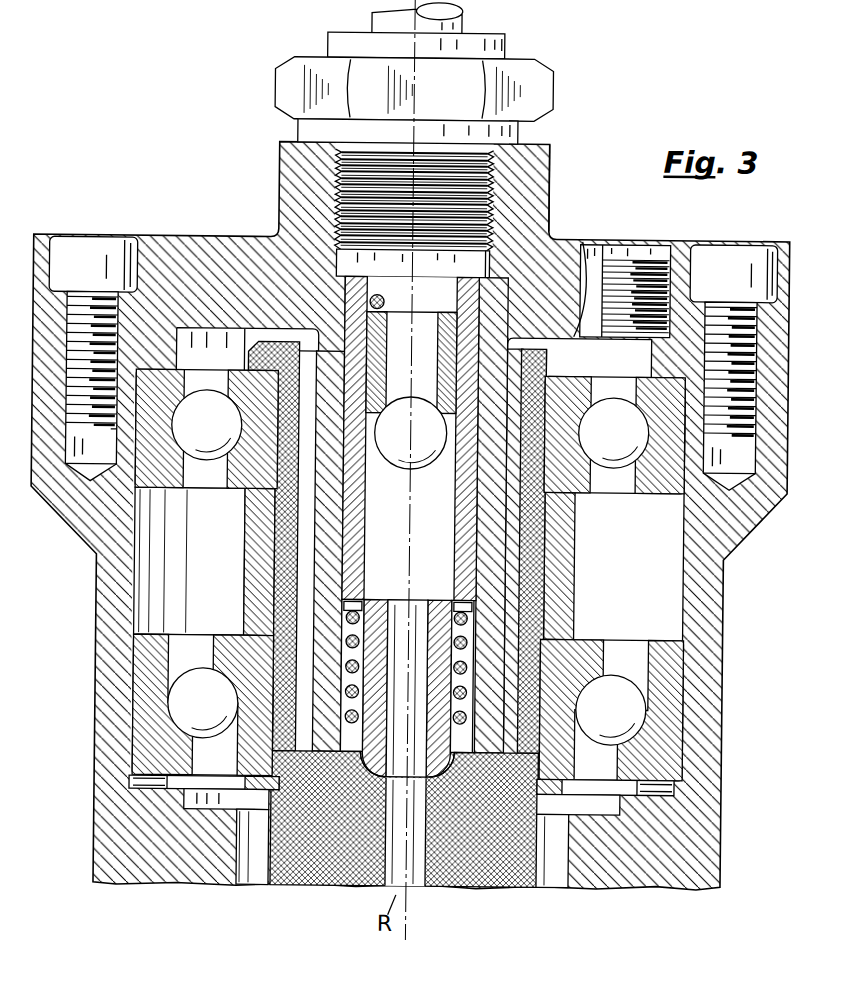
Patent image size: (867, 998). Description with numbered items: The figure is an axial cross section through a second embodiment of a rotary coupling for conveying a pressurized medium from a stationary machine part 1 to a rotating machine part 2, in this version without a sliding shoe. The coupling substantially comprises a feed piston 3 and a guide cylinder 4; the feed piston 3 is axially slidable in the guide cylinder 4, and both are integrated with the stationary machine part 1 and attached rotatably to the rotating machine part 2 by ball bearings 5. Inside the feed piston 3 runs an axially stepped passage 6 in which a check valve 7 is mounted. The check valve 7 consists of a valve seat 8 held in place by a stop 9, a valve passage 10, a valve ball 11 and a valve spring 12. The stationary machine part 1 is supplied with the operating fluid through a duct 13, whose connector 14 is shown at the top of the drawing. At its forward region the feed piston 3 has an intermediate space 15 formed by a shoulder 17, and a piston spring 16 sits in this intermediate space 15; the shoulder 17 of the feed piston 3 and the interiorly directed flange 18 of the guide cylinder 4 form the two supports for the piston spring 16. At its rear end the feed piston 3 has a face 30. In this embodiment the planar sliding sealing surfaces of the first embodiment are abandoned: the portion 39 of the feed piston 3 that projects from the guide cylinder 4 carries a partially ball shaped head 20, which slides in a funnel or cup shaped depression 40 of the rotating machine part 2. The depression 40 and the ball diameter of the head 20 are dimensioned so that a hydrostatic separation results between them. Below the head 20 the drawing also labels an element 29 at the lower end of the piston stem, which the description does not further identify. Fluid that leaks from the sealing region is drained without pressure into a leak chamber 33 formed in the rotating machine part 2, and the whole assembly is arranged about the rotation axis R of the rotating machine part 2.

The stationary machine part 1 is at (552, 158).
The rotating machine part 2 is at (528, 878).
The feed piston 3 is at (362, 542).
The guide cylinder 4 is at (490, 546).
The ball bearings 5 is at (657, 493).
The axially stepped passage 6 is at (362, 598).
The check valve 7 is at (526, 495).
The valve seat 8 is at (452, 312).
The stop 9 is at (383, 301).
The valve passage 10 is at (406, 392).
The valve ball 11 is at (428, 420).
The valve spring 12 is at (362, 520).
The duct 13 is at (493, 190).
The connector 14 is at (543, 86).
The intermediate space 15 is at (357, 624).
The piston spring 16 is at (347, 638).
The shoulder 17 is at (462, 613).
The interiorly directed flange 18 is at (463, 740).
The head 20 is at (369, 792).
The shaft end 29 is at (414, 867).
The face 30 is at (465, 276).
The leak chamber 33 is at (668, 573).
The portion 39 is at (303, 742).
The depression 40 is at (418, 742).